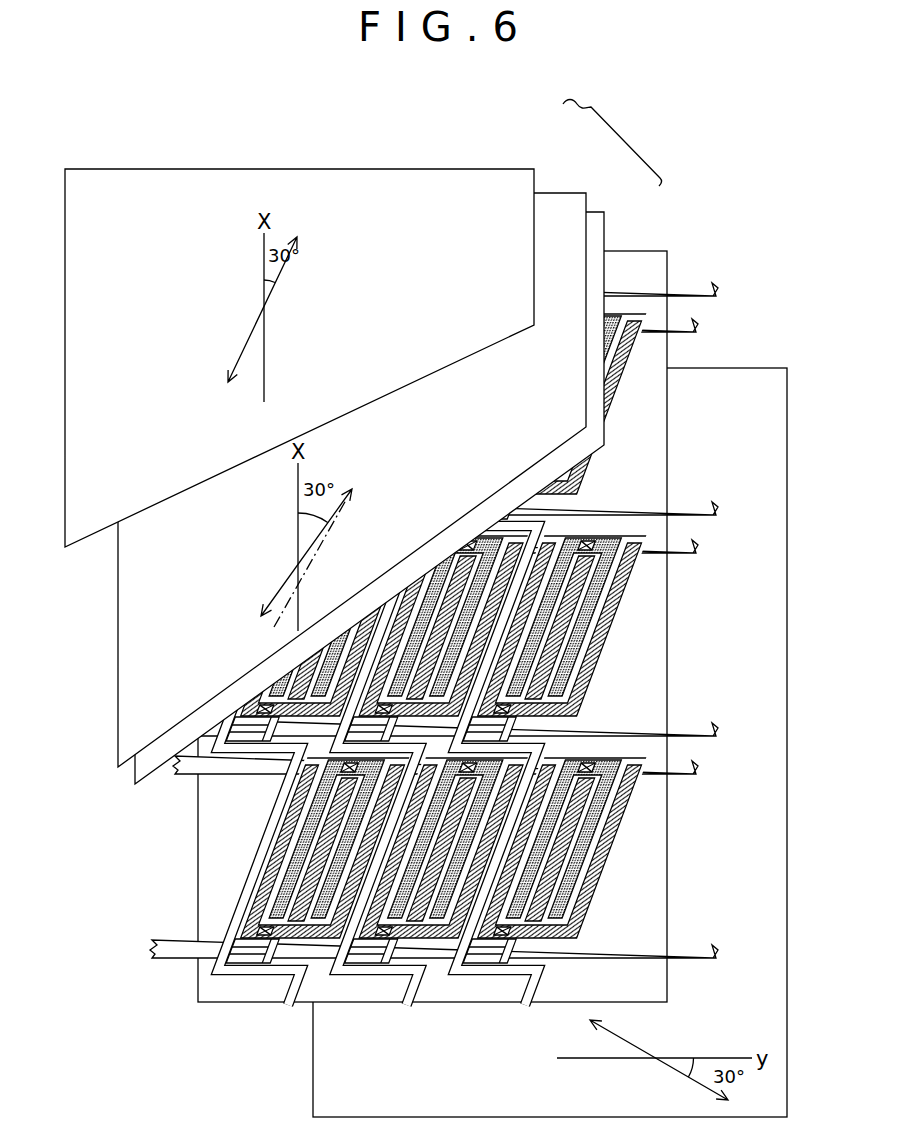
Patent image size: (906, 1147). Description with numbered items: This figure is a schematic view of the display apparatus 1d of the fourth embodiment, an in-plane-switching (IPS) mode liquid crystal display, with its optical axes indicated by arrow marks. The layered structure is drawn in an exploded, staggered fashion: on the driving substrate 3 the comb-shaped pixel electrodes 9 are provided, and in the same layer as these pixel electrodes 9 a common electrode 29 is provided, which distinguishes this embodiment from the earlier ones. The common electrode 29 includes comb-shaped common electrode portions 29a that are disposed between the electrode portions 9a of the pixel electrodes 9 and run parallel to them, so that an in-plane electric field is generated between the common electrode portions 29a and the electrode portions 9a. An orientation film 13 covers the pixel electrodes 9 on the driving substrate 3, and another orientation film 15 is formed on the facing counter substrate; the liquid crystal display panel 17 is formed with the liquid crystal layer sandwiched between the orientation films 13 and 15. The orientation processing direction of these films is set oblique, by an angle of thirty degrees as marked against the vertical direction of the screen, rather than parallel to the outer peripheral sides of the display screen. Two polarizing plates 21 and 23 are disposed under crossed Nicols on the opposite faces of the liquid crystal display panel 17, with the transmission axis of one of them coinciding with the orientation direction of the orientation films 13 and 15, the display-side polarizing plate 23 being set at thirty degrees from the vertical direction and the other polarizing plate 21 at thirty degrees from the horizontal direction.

The display apparatus 1d is at (109, 106).
The driving substrate 3 is at (640, 251).
The pixel electrode 9 is at (627, 375).
The electrode portion 9a is at (627, 585).
The orientation film 13 is at (600, 212).
The orientation film 15 is at (562, 193).
The liquid crystal display panel 17 is at (612, 137).
The polarizing plate 21 is at (313, 1057).
The polarizing plate 23 is at (175, 168).
The common electrode 29 is at (615, 316).
The common electrode portion 29a is at (592, 613).